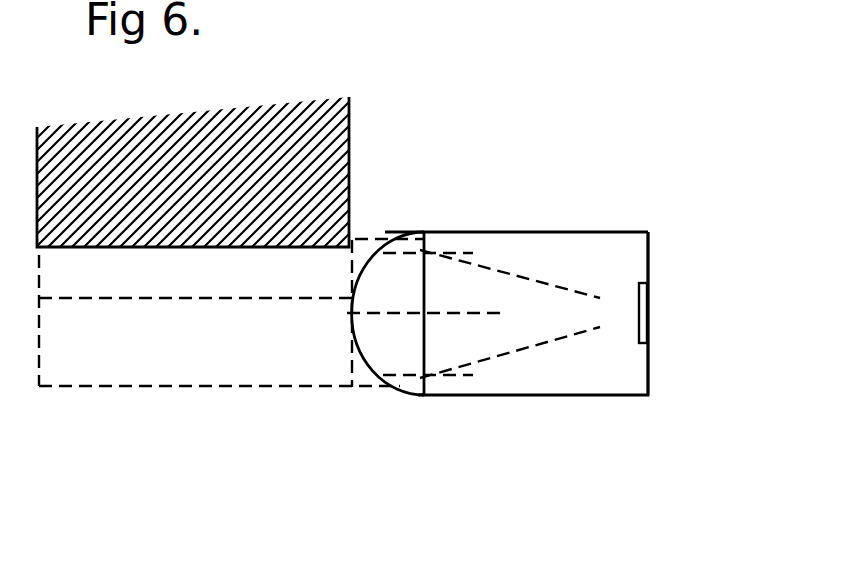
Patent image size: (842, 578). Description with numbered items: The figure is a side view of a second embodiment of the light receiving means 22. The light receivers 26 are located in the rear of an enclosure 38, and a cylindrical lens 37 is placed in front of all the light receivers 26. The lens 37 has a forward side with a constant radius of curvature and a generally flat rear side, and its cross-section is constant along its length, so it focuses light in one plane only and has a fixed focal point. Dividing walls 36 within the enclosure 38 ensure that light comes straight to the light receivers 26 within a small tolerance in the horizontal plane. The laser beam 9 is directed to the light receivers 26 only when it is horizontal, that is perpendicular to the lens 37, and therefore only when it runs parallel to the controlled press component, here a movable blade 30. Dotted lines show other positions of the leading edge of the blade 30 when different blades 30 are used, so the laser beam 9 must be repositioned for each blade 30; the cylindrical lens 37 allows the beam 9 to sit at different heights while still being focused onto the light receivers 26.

The movable blade 30 is at (349, 130).
The cylindrical lens 37 is at (398, 277).
The laser beam 9 is at (493, 266).
The dividing walls 36 is at (596, 268).
The enclosure 38 is at (648, 248).
The light receivers 26 is at (636, 333).
The light receiving means 22 is at (612, 397).